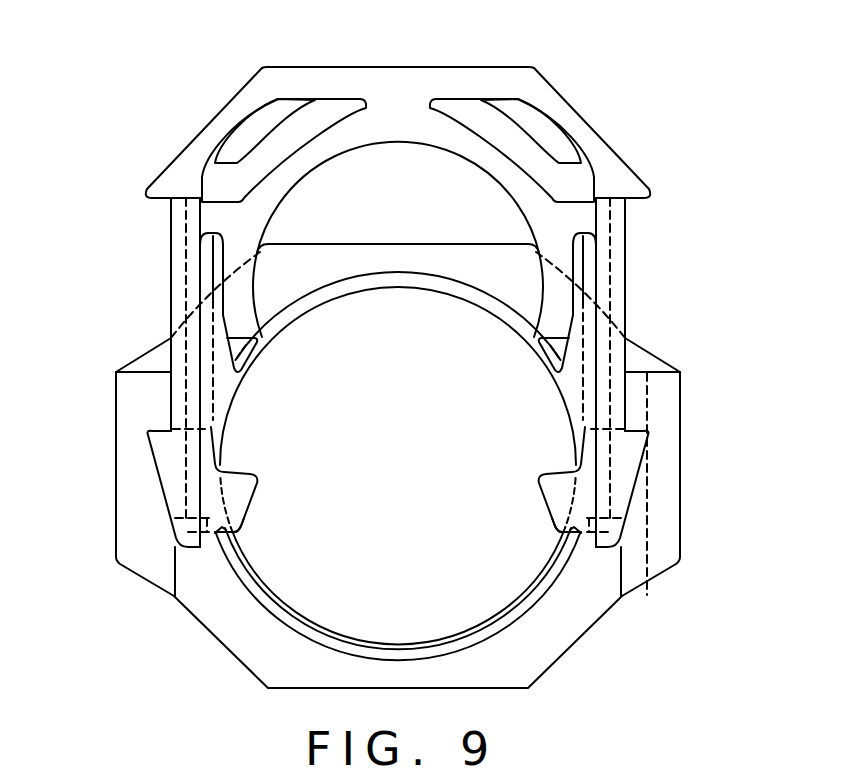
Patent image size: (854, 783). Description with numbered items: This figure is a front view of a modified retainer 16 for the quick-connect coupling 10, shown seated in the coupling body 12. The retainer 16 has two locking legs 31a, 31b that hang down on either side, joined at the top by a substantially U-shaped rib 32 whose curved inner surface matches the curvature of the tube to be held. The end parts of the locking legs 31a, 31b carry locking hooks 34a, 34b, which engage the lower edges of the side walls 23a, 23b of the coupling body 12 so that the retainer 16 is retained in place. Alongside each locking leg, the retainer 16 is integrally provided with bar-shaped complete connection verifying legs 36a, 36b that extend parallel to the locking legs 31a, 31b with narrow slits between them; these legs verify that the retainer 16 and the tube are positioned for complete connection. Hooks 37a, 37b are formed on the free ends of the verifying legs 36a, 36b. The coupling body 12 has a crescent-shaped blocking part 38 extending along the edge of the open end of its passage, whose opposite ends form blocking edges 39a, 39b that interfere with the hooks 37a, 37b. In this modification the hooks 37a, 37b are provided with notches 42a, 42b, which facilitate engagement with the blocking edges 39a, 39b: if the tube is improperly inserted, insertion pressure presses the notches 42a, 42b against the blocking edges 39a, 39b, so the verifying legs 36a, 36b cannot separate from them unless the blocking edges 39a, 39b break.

The quick-connect coupling 10 is at (192, 114).
The coupling body 12 is at (650, 332).
The retainer 16 is at (370, 58).
The side wall 23a is at (130, 398).
The side wall 23b is at (668, 398).
The locking leg 31a is at (178, 224).
The locking leg 31b is at (618, 231).
The U-shaped rib 32 is at (285, 183).
The locking hook 34a is at (164, 458).
The locking hook 34b is at (632, 456).
The complete connection verifying leg 36a is at (207, 379).
The complete connection verifying leg 36b is at (588, 377).
The hook 37a is at (257, 472).
The hook 37b is at (540, 472).
The blocking part 38 is at (378, 655).
The blocking edge 39a is at (231, 539).
The blocking edge 39b is at (560, 541).
The notch 42a is at (236, 534).
The notch 42b is at (562, 534).